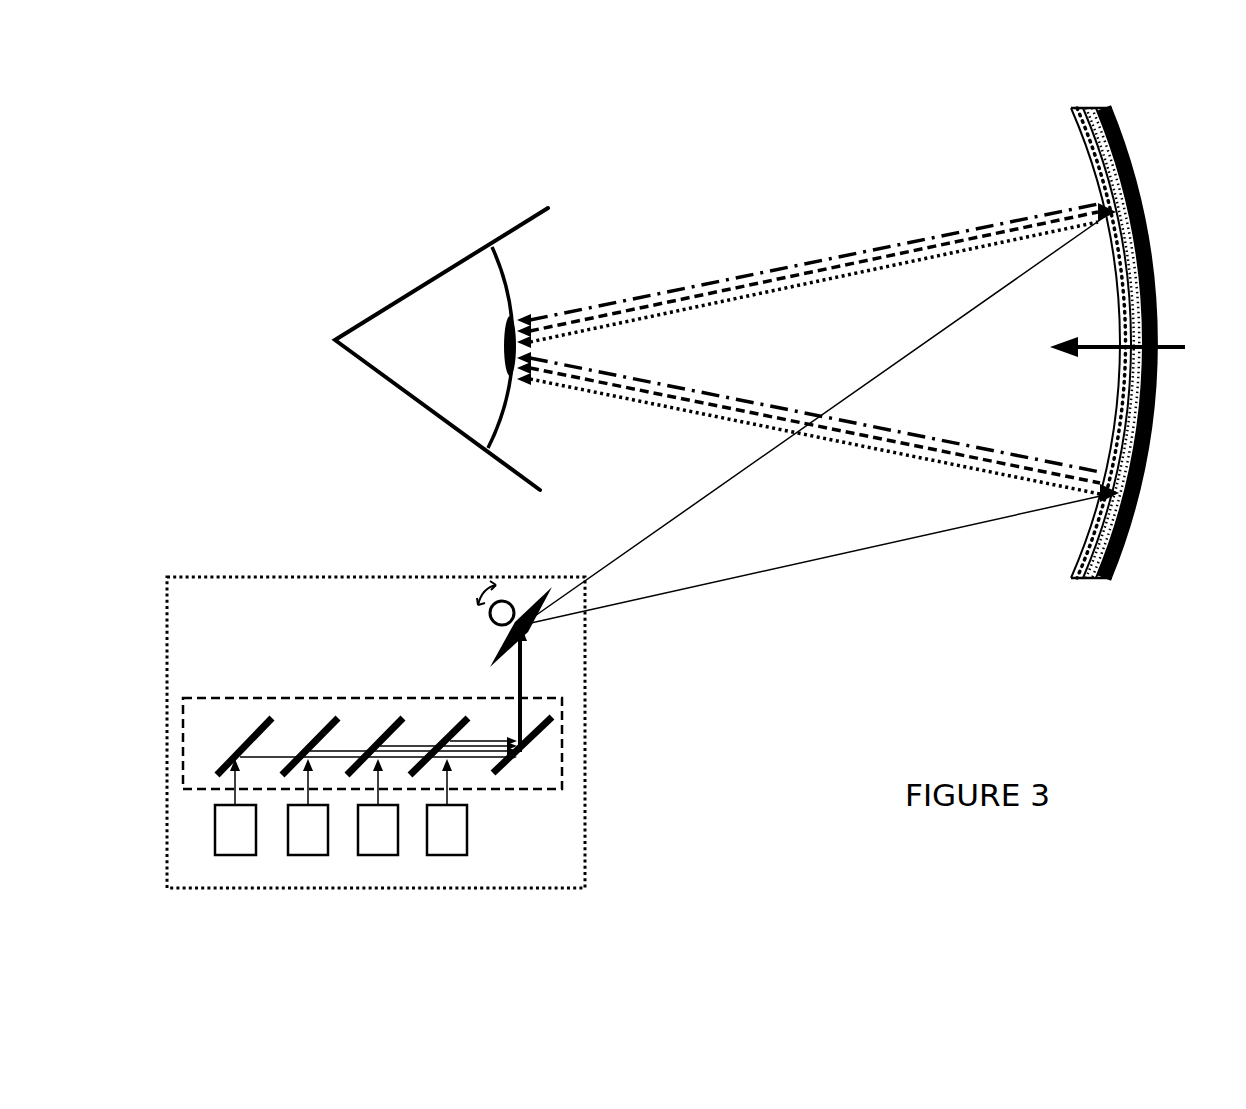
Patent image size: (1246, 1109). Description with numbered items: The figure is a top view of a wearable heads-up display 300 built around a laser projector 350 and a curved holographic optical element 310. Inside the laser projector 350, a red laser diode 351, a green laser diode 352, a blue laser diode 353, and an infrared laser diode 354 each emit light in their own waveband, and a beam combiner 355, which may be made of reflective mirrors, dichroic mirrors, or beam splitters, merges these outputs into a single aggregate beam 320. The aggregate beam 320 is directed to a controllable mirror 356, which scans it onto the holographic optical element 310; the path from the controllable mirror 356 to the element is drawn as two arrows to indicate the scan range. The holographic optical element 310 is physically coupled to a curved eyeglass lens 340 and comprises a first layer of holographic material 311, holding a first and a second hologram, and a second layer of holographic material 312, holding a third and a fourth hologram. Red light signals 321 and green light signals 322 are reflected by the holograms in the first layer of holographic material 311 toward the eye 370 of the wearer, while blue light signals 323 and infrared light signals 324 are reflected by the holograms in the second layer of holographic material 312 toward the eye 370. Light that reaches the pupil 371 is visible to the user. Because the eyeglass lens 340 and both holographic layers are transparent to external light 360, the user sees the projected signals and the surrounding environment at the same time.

The wearable heads-up display 300 is at (258, 521).
The curved holographic optical element 310 is at (1078, 100).
The first layer of holographic material 311 is at (1072, 580).
The second layer of holographic material 312 is at (1087, 583).
The aggregate beam 320 is at (693, 504).
The red light signals 321 is at (573, 389).
The green light signals 322 is at (678, 400).
The blue light signals 323 is at (600, 373).
The infrared light signals 324 is at (723, 397).
The curved eyeglass lens 340 is at (1107, 582).
The laser projector 350 is at (437, 760).
The red laser diode 351 is at (235, 856).
The green laser diode 352 is at (308, 856).
The blue laser diode 353 is at (378, 856).
The infrared laser diode 354 is at (447, 856).
The beam combiner 355 is at (562, 768).
The controllable mirror 356 is at (489, 613).
The external light 360 is at (1172, 347).
The eye 370 is at (418, 355).
The pupil 371 is at (505, 338).